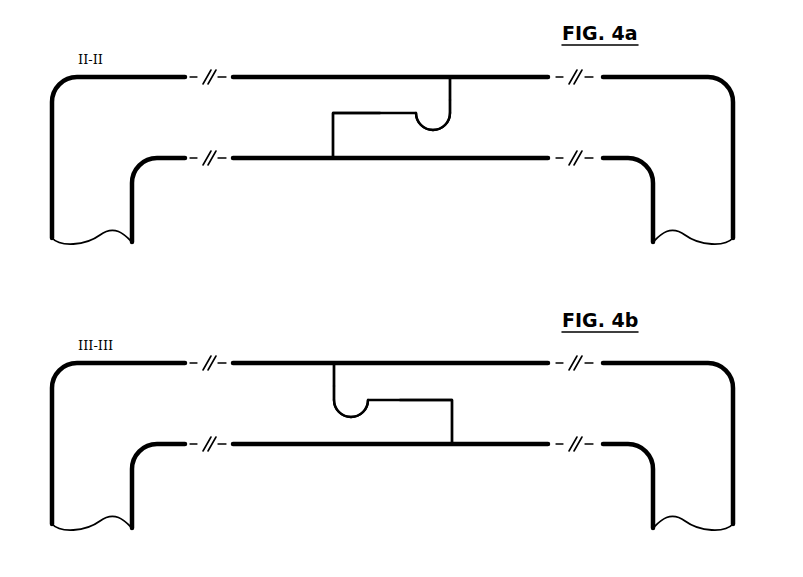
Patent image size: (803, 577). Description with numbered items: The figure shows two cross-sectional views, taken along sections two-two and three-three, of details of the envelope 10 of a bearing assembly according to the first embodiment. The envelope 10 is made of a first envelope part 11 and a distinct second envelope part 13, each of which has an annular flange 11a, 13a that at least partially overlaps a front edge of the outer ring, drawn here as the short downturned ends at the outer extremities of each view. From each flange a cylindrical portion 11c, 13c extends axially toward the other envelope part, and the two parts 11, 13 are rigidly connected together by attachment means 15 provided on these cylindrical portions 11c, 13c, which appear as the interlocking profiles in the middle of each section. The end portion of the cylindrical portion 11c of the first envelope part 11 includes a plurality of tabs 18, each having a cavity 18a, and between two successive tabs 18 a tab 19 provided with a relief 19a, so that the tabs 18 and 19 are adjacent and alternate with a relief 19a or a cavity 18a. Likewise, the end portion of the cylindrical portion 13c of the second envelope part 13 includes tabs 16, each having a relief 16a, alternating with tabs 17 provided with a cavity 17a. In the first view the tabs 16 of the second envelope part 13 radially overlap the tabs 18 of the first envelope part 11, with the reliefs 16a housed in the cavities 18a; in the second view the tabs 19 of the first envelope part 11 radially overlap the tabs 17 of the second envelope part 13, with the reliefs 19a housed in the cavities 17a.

In FIG. 4A, the envelope 10 is at (667, 67).
In FIG. 4B, the envelope 10 is at (667, 353).
In FIG. 4A, the first envelope part 11 is at (587, 188).
In FIG. 4B, the first envelope part 11 is at (587, 474).
In FIG. 4A, the annular flange 11a is at (650, 235).
In FIG. 4B, the annular flange 11a is at (650, 500).
In FIG. 4A, the cylindrical portion 11c is at (525, 161).
In FIG. 4B, the cylindrical portion 11c is at (525, 447).
In FIG. 4A, the second envelope part 13 is at (219, 190).
In FIG. 4B, the second envelope part 13 is at (219, 476).
In FIG. 4A, the annular flange 13a is at (134, 234).
In FIG. 4B, the annular flange 13a is at (134, 496).
In FIG. 4A, the cylindrical portion 13c is at (245, 75).
In FIG. 4B, the cylindrical portion 13c is at (245, 361).
In FIG. 4A, the attachment means 15 is at (424, 172).
In FIG. 4B, the attachment means 15 is at (424, 458).
In FIG. 4A, the tab 16 is at (378, 85).
In FIG. 4A, the relief 16a is at (434, 124).
In FIG. 4B, the tab 17 is at (375, 436).
In FIG. 4B, the cavity 17a is at (329, 402).
In FIG. 4A, the tab 18 is at (375, 147).
In FIG. 4A, the cavity 18a is at (456, 118).
In FIG. 4B, the tab 19 is at (398, 375).
In FIG. 4B, the relief 19a is at (352, 410).